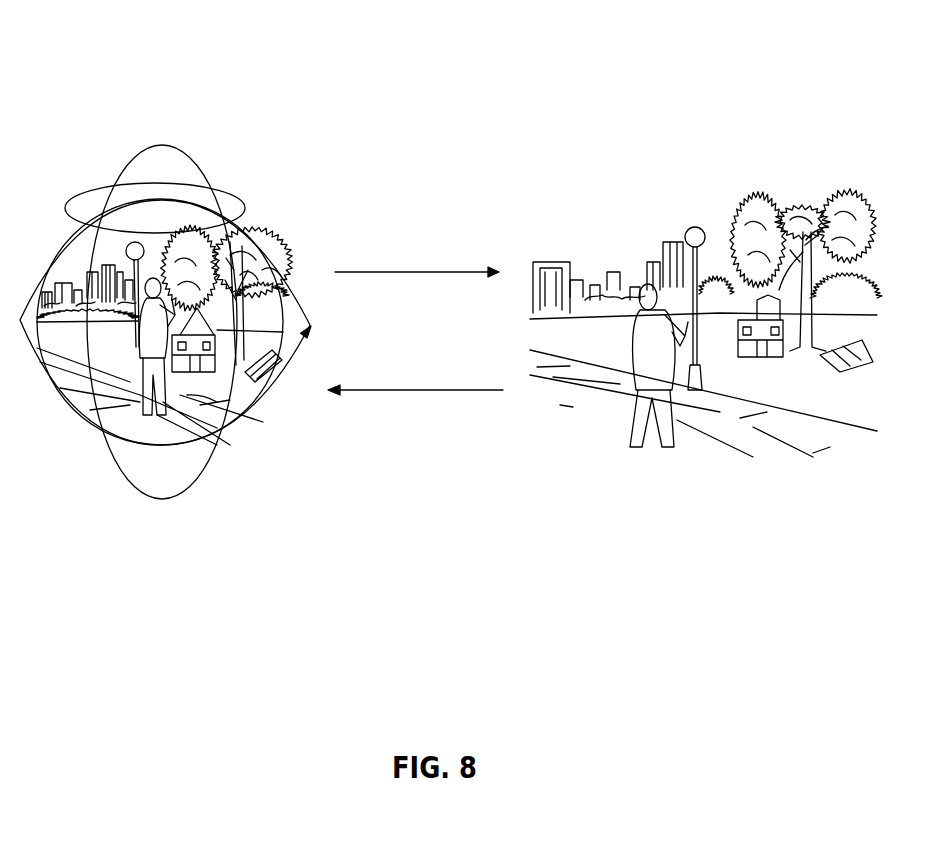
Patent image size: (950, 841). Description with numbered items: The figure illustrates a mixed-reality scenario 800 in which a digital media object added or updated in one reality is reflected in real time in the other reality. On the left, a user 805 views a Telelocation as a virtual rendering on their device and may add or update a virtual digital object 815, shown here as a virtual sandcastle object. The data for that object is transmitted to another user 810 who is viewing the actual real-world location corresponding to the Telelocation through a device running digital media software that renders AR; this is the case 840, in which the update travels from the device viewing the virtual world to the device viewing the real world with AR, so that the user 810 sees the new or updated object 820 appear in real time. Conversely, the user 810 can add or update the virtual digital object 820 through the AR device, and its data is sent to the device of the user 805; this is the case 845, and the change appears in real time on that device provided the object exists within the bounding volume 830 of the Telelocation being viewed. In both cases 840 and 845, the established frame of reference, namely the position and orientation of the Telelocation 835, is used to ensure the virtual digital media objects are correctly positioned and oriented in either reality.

The mixed-reality scenario 800 is at (147, 52).
The user viewing the virtual Telelocation rendering 805 is at (152, 337).
The user viewing the real world with AR 810 is at (706, 324).
The virtual digital object 815 is at (207, 365).
The new or updated object in AR 820 is at (767, 360).
The bounding volume of the Telelocation 830 is at (256, 239).
The position and orientation of the Telelocation 835 is at (147, 148).
The case of virtual-to-AR update 840 is at (438, 266).
The case of AR-to-virtual update 845 is at (443, 384).